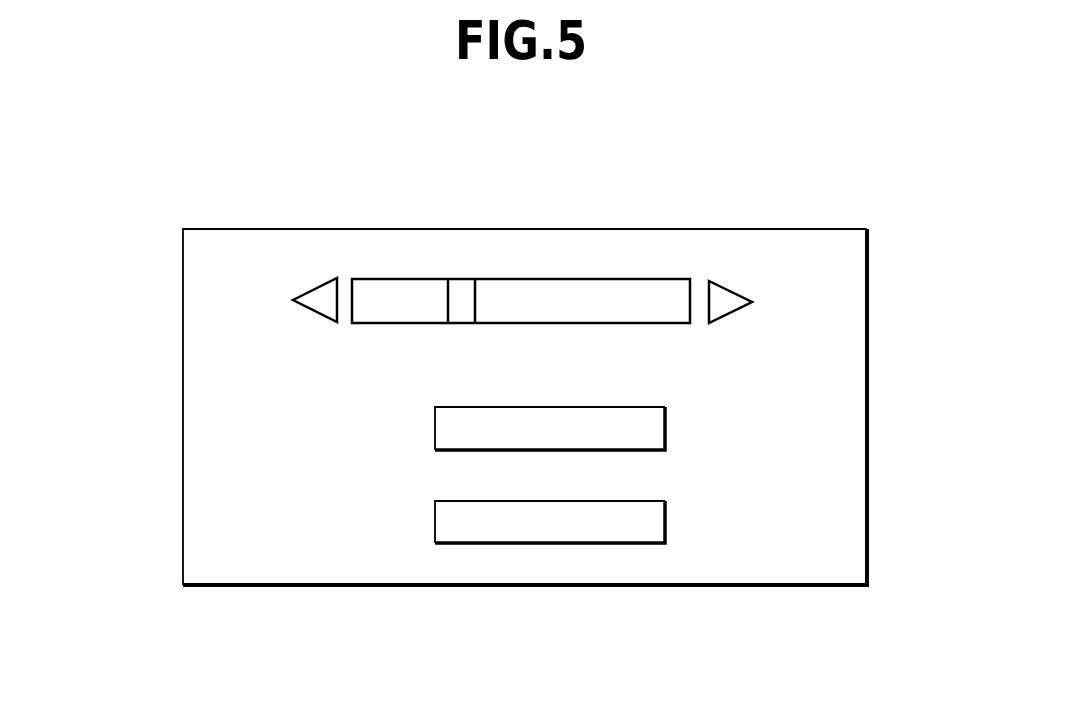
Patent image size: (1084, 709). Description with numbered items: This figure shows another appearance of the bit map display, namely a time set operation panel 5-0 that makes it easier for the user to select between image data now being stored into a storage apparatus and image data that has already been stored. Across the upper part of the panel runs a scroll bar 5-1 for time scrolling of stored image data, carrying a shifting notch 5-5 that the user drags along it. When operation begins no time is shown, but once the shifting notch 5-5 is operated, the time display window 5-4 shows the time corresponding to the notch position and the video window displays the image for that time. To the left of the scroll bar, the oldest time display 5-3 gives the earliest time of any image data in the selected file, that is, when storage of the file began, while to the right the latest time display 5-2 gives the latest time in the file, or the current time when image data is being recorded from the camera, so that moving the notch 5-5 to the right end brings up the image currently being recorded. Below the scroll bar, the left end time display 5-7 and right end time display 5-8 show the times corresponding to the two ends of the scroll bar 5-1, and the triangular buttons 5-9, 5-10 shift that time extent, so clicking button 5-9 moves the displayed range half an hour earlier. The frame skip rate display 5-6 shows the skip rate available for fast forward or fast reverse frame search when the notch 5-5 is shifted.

The time set operation panel 5-0 is at (445, 588).
The scroll bar 5-1 is at (602, 278).
The latest time display 5-2 is at (812, 278).
The oldest time display 5-3 is at (247, 278).
The time display window 5-4 is at (665, 430).
The shifting notch 5-5 is at (460, 278).
The frame skip rate display 5-6 is at (627, 543).
The left end time display 5-7 is at (350, 363).
The right end time display 5-8 is at (692, 367).
The triangular button 5-9 is at (323, 282).
The triangular button 5-10 is at (727, 287).